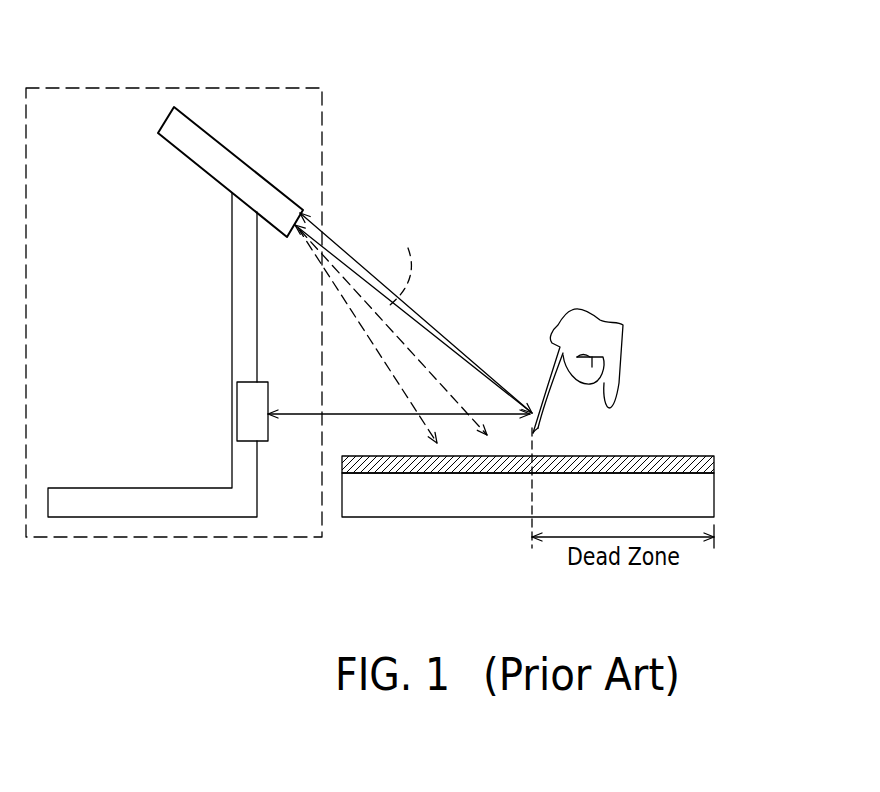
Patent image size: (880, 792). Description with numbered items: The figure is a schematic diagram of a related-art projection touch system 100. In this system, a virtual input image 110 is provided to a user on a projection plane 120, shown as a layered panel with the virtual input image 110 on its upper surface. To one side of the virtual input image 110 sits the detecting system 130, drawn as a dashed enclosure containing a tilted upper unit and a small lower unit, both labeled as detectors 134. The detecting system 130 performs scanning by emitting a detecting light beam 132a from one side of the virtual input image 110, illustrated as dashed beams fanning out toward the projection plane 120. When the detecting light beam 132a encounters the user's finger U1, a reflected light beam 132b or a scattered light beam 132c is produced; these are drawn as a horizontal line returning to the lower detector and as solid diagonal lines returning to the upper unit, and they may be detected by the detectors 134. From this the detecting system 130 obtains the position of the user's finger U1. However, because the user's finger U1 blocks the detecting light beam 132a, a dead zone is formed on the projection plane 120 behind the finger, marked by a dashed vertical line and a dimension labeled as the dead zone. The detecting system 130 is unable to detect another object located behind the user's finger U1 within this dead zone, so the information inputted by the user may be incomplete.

The projection touch system 100 is at (718, 625).
The virtual input image 110 is at (716, 467).
The projection plane 120 is at (710, 497).
The detecting system 130 is at (275, 87).
The detectors 134 is at (168, 128).
The detecting light beam 132a is at (373, 287).
The reflected light beam 132b is at (360, 415).
The scattered light beam 132c is at (335, 245).
The user's finger U1 is at (572, 325).